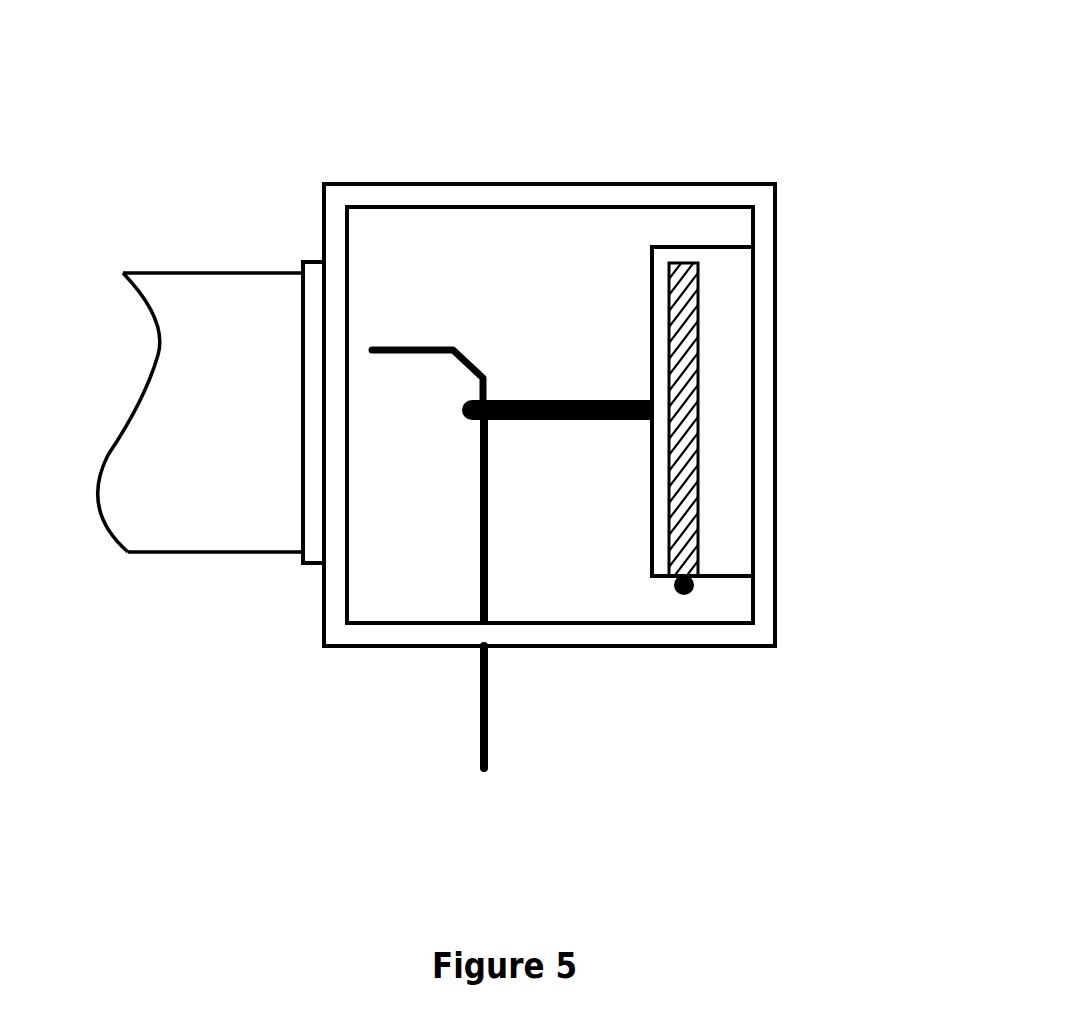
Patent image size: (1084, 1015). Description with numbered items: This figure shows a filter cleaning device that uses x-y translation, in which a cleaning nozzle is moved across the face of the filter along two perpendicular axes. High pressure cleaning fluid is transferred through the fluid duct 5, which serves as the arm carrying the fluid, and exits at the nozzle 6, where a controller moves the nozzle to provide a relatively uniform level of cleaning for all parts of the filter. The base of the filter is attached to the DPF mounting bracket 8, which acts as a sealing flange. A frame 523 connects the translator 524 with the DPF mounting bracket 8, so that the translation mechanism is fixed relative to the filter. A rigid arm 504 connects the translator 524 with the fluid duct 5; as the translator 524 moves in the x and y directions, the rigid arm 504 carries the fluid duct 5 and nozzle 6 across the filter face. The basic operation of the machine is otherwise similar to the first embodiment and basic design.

The fluid duct 5 is at (455, 699).
The nozzle 6 is at (407, 320).
The DPF mounting bracket 8 is at (295, 248).
The rigid arm 504 is at (542, 387).
The frame 523 is at (667, 173).
The translator 524 is at (712, 602).